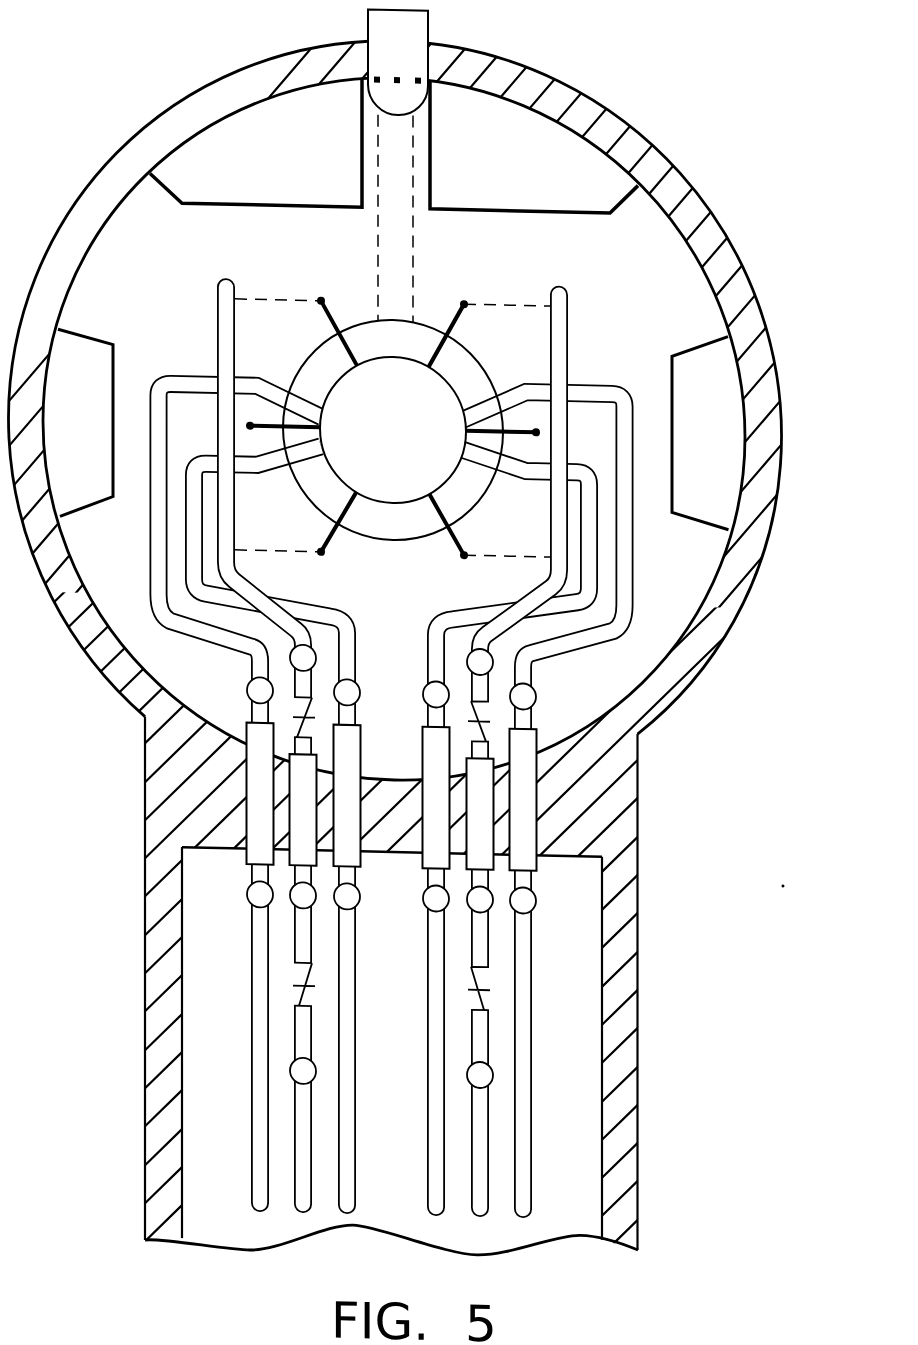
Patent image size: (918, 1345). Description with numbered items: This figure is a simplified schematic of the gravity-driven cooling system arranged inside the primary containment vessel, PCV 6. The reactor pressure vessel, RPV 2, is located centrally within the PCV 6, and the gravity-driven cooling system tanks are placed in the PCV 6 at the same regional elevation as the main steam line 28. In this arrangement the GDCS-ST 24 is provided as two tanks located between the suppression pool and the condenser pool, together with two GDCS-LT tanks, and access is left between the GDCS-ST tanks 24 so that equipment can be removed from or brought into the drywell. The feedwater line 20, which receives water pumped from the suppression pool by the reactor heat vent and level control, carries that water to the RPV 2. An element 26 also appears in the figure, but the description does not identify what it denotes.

The housing 6 is at (711, 191).
The support shelf 26 is at (302, 144).
The guide block 24 is at (89, 341).
The cable 2 is at (431, 314).
The conductor tube 20 is at (218, 297).
The conductor loop 28 is at (186, 540).